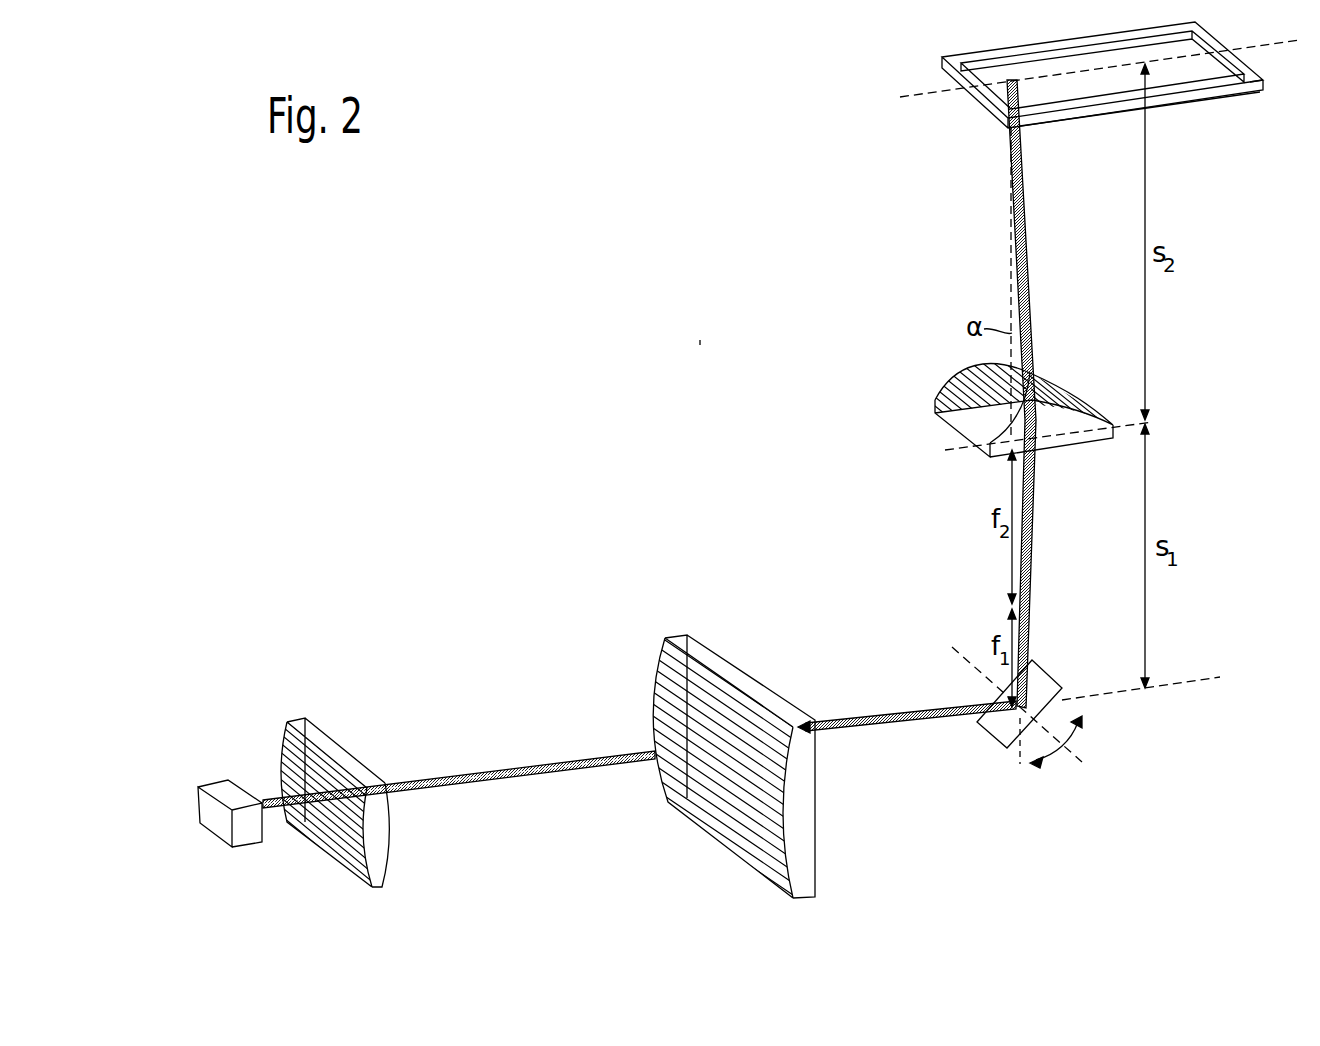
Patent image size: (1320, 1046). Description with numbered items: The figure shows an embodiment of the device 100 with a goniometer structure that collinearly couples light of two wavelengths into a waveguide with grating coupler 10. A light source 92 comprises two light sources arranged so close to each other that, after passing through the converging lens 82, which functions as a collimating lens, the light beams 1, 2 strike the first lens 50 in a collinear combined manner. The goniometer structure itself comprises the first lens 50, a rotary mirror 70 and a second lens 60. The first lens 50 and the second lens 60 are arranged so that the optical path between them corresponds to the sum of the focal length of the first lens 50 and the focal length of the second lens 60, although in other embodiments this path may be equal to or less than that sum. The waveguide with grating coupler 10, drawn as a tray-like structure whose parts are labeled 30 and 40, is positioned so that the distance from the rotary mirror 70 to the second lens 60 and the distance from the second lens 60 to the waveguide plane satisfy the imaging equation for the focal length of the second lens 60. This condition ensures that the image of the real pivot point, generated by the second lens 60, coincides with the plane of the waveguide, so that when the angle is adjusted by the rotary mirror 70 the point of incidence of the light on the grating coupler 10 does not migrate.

The light beam 1 is at (437, 793).
The light beam 2 is at (503, 772).
The waveguide with grating coupler 10 is at (975, 57).
The tray side wall 30 is at (1185, 97).
The tray edge 40 is at (1236, 97).
The first lens 50 is at (802, 830).
The second lens 60 is at (1071, 444).
The rotary mirror 70 is at (1035, 680).
The converging lens 82 is at (302, 720).
The light source 92 is at (223, 790).
The device 100 is at (700, 348).